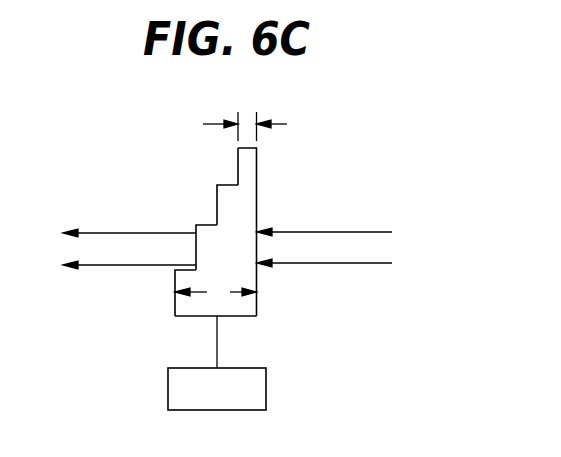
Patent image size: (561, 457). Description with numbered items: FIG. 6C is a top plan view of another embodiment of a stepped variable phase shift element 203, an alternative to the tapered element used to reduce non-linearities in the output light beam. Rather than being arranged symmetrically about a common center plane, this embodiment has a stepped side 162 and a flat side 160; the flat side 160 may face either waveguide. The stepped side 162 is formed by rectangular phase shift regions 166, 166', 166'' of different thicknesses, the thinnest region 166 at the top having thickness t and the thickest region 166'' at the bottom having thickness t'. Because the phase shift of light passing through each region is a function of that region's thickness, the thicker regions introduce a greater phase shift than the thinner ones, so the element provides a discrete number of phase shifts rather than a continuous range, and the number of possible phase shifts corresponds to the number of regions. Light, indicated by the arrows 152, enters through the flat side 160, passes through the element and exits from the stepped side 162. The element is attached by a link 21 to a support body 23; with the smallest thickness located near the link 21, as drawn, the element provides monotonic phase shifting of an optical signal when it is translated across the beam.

The lead portion 203 is at (245, 200).
The upper thin section of lead 166 is at (232, 148).
The stepped side 162 is at (218, 195).
The middle section of lead 166' is at (140, 277).
The lower thick section of lead 166'' is at (148, 318).
The flat side 160 is at (258, 299).
The applied force 152 is at (317, 232).
The link 21 is at (217, 353).
The base block 23 is at (257, 380).